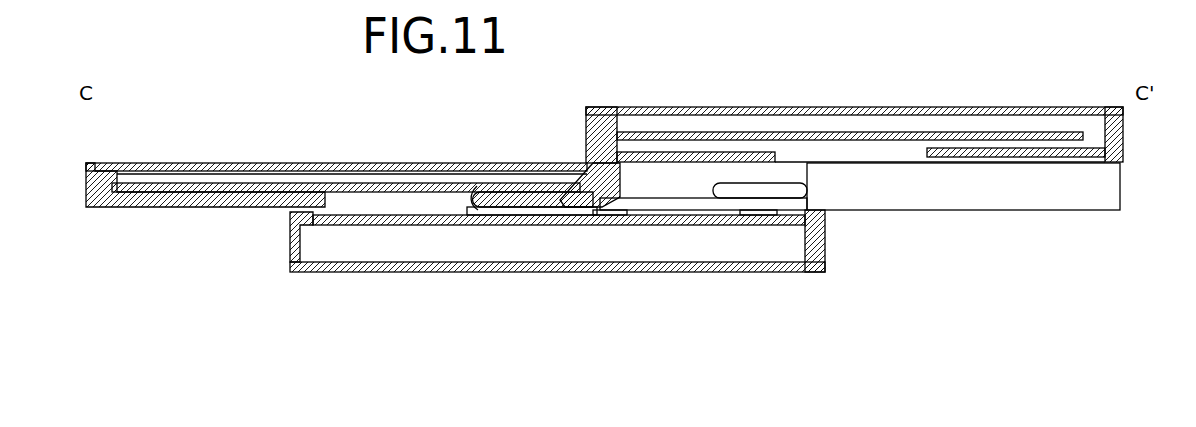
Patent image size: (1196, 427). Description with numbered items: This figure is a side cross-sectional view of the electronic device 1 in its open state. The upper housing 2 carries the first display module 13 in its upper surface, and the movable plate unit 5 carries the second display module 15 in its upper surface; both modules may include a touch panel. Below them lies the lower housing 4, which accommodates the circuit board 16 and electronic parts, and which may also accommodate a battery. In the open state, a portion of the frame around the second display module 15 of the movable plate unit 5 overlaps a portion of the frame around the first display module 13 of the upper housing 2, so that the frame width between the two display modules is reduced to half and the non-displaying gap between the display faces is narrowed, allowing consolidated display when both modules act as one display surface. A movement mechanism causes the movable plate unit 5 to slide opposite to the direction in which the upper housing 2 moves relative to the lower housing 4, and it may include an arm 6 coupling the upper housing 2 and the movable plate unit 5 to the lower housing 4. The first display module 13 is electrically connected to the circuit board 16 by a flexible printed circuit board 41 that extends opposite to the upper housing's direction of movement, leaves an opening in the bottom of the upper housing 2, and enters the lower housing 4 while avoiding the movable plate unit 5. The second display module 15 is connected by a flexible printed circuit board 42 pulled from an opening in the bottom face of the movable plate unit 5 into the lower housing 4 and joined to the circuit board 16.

The electronic device 1 is at (632, 64).
The upper housing 2 is at (1125, 113).
The lower housing 4 is at (828, 232).
The movable plate unit 5 is at (88, 172).
The arm 6 is at (1122, 191).
The first display module 13 is at (893, 107).
The second display module 15 is at (366, 163).
The circuit board 16 is at (411, 226).
The flexible printed circuit board 41 is at (790, 185).
The flexible printed circuit board 42 is at (478, 204).